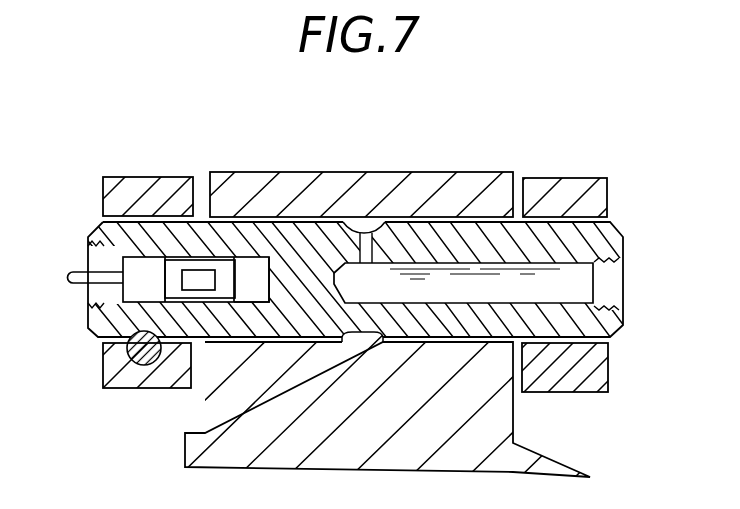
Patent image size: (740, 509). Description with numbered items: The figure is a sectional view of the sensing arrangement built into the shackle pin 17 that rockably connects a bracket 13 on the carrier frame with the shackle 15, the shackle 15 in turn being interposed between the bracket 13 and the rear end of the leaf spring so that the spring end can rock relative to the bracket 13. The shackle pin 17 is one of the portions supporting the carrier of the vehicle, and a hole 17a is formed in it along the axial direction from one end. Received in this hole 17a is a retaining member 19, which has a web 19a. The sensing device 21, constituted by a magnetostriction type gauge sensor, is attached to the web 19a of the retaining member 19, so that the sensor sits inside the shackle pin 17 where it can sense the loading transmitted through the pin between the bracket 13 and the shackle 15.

The bracket 13 is at (161, 184).
The shackle 15 is at (460, 183).
The shackle pin 17 is at (340, 330).
The hole 17a is at (253, 300).
The retaining member 19 is at (246, 273).
The web 19a is at (239, 290).
The sensing device 21 is at (192, 278).